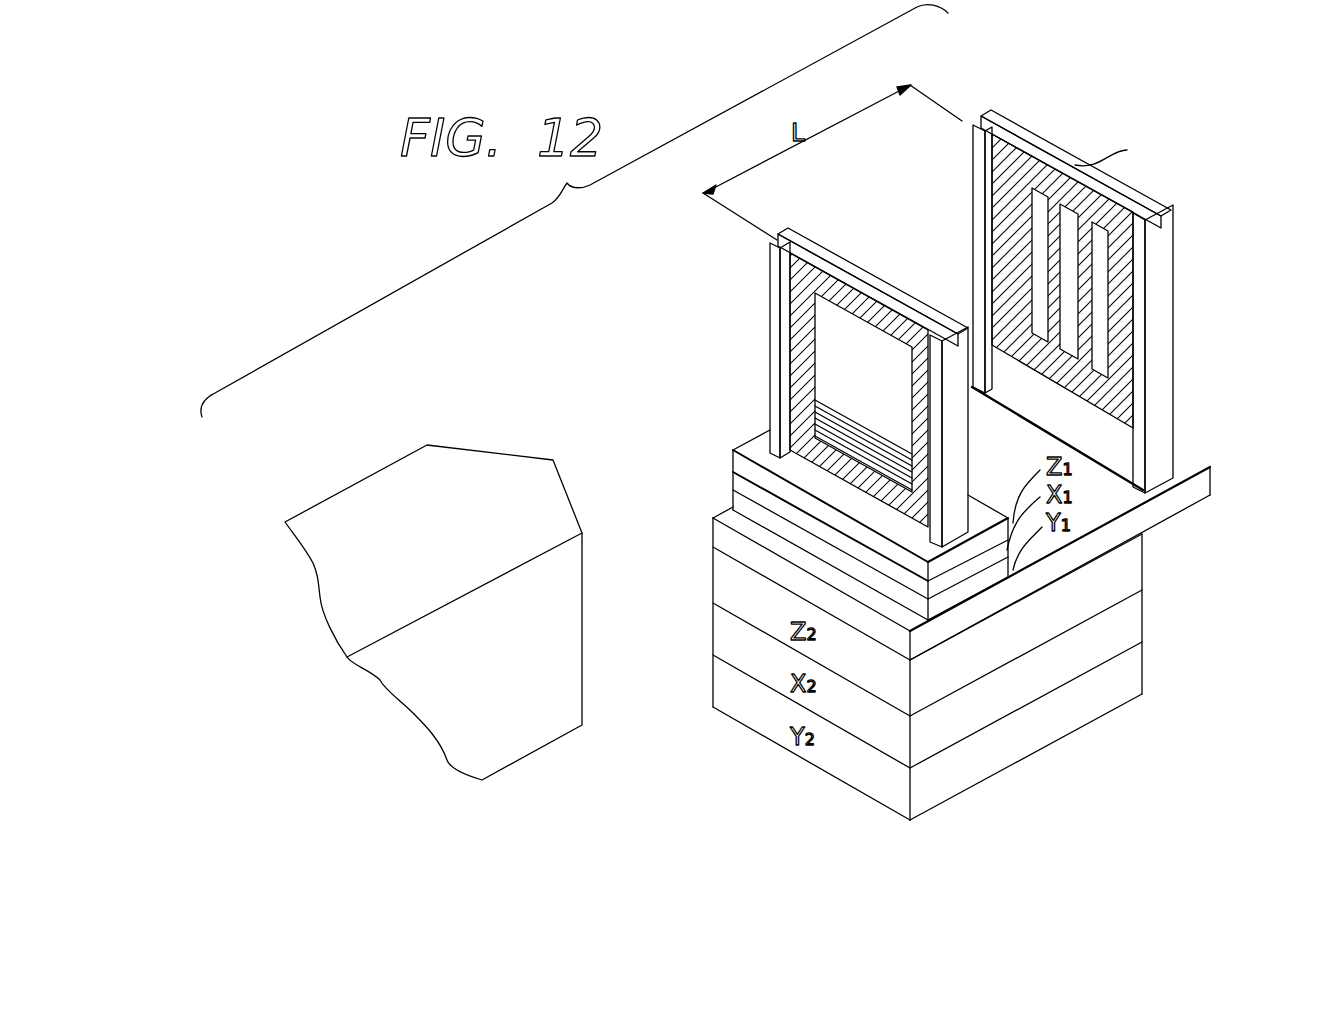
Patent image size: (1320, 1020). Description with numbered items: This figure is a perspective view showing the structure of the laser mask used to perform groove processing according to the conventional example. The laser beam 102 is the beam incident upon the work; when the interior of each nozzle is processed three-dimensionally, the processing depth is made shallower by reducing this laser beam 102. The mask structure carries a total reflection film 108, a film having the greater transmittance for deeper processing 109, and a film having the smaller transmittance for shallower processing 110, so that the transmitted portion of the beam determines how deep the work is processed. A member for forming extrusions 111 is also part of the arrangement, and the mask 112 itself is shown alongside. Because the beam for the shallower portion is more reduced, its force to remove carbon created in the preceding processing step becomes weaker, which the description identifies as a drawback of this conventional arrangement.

The laser beam 102 is at (497, 478).
The total reflection film 108 is at (803, 302).
The film having the greater transmittance for deeper processing 109 is at (840, 367).
The film having the smaller transmittance for shallower processing 110 is at (833, 425).
The member for forming extrusions 111 is at (842, 260).
The mask 112 is at (1198, 322).